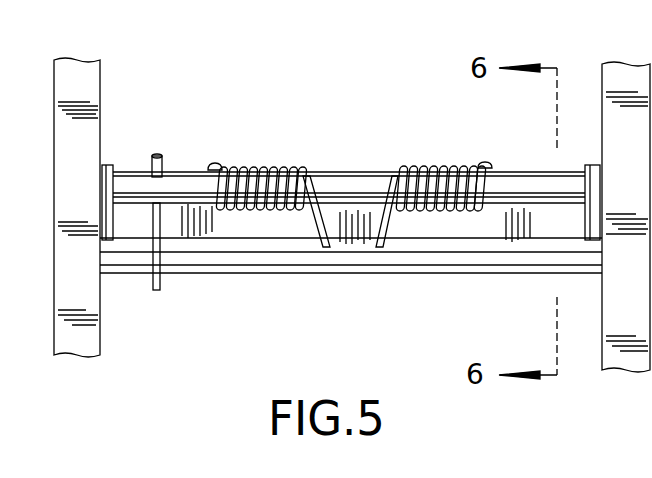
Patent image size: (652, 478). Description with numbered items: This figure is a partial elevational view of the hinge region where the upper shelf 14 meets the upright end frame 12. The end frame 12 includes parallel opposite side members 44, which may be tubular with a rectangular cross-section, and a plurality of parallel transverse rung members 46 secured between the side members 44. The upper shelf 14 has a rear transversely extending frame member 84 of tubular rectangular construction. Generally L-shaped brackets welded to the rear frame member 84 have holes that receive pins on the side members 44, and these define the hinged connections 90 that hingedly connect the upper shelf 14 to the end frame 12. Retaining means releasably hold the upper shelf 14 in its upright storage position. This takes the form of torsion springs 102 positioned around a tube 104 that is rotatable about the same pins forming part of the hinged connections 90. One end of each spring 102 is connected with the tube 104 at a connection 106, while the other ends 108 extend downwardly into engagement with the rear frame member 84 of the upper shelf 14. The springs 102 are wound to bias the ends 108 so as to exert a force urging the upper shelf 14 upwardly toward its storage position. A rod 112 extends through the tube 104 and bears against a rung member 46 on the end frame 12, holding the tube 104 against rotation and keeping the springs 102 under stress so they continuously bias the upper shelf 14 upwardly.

The upright end frame 12 is at (620, 82).
The upper shelf 14 is at (490, 238).
The side members 44 is at (88, 344).
The rung members 46 is at (222, 266).
The rear frame member 84 is at (545, 222).
The hinged connections 90 is at (109, 165).
The torsion springs 102 is at (397, 172).
The tube 104 is at (174, 172).
The spring end connection 106 is at (218, 163).
The spring ends 108 is at (379, 250).
The rod 112 is at (157, 290).